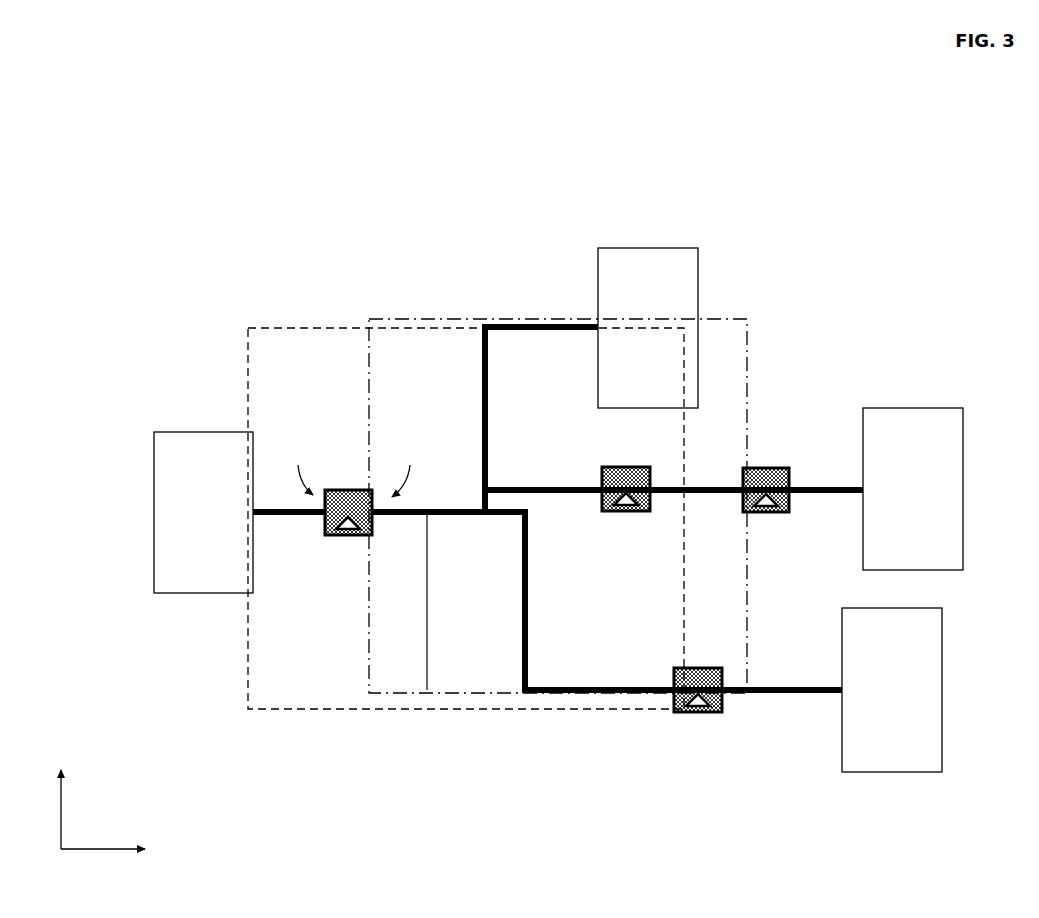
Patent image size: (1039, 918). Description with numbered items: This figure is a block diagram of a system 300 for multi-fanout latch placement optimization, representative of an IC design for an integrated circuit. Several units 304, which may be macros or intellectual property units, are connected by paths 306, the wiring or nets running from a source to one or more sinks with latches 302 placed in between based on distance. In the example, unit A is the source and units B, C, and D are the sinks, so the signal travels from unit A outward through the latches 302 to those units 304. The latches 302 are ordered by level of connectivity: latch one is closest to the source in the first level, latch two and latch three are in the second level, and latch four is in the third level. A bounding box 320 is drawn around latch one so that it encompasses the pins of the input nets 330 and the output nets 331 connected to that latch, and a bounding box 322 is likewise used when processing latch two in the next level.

The system 300 is at (955, 150).
The latch 302 is at (349, 537).
The unit 304 is at (167, 431).
The path 306 is at (492, 570).
The bounding box 320 is at (259, 712).
The bounding box 322 is at (730, 318).
The input nets 330 is at (277, 508).
The output nets 331 is at (427, 690).